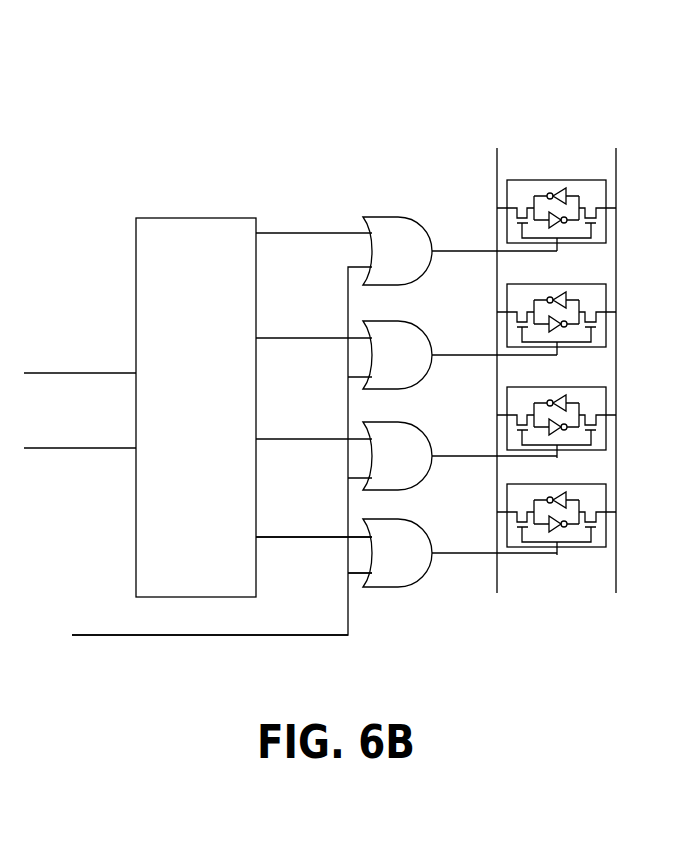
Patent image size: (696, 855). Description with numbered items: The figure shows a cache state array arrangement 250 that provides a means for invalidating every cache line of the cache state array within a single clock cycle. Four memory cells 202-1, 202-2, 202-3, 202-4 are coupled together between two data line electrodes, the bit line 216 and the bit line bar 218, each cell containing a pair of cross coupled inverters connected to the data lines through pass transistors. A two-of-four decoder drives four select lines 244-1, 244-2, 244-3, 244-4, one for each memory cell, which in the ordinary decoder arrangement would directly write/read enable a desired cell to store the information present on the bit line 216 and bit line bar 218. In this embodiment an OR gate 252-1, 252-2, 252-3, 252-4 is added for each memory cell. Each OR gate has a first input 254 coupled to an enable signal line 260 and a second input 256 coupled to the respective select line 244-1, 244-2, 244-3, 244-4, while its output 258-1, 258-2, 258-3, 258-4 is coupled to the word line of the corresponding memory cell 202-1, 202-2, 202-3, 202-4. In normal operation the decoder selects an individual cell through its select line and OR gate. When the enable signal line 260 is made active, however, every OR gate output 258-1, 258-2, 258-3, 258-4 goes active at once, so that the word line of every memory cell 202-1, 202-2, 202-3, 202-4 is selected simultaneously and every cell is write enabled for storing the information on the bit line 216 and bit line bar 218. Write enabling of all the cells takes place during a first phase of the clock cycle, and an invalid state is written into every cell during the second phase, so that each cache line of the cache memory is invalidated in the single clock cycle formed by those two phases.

The cache state array with OR gate decoding 250 is at (373, 141).
The memory cell 202-1 is at (607, 187).
The memory cell 202-2 is at (607, 291).
The memory cell 202-3 is at (607, 394).
The memory cell 202-4 is at (607, 491).
The bit line 216 is at (503, 630).
The bit line bar 218 is at (627, 630).
The select line 244-1 is at (318, 226).
The select line 244-2 is at (318, 331).
The select line 244-3 is at (318, 432).
The select line 244-4 is at (318, 530).
The OR gate 252-1 is at (410, 216).
The OR gate 252-2 is at (440, 320).
The OR gate 252-3 is at (440, 421).
The OR gate 252-4 is at (440, 521).
The first input 254 is at (336, 538).
The second input 256 is at (382, 576).
The output 258-1 is at (478, 243).
The output 258-2 is at (478, 347).
The output 258-3 is at (478, 448).
The output 258-4 is at (478, 545).
The enable signal 260 is at (318, 625).